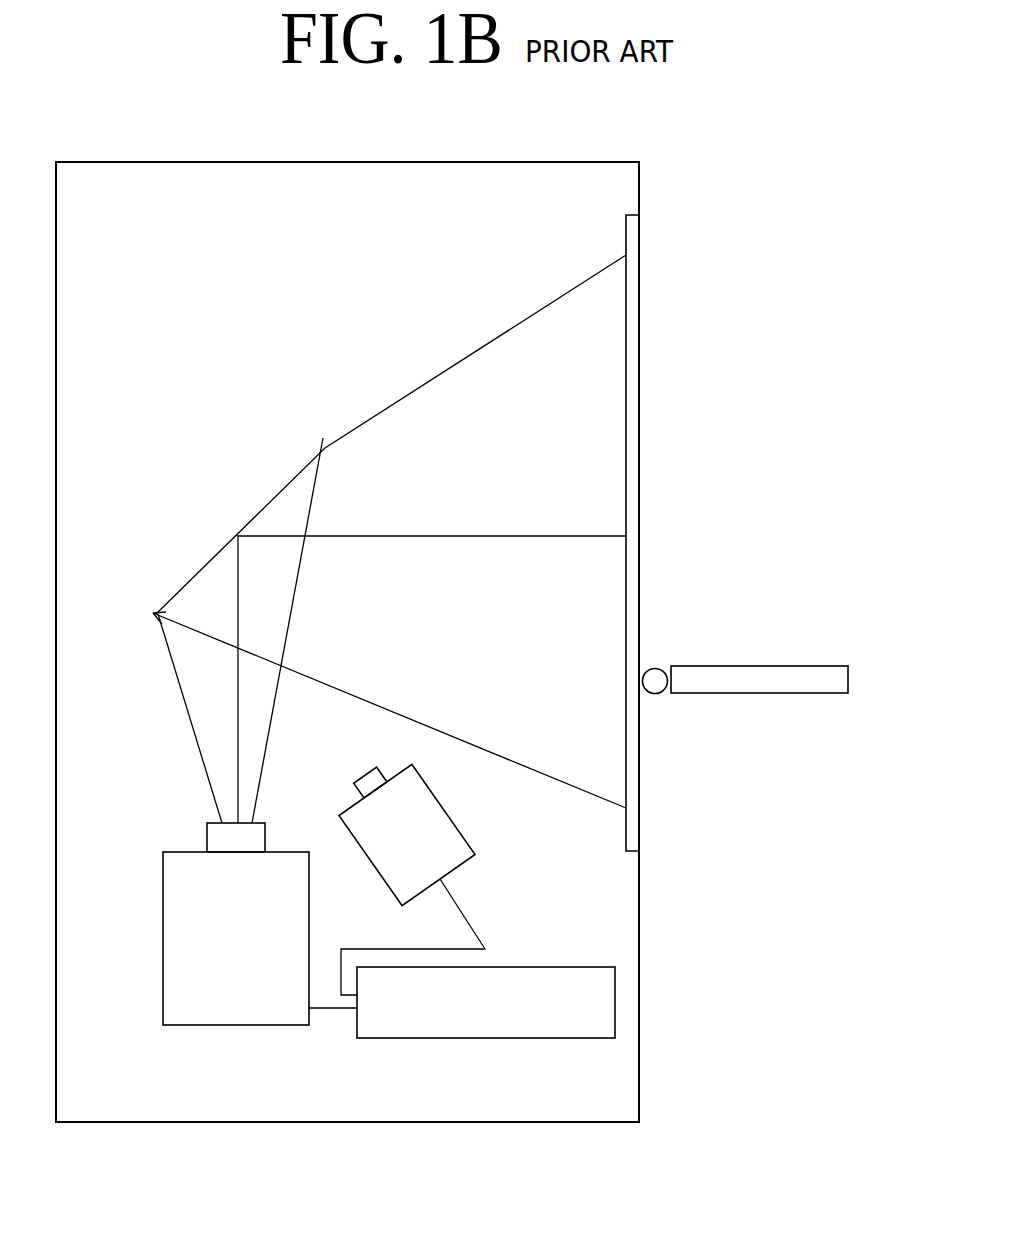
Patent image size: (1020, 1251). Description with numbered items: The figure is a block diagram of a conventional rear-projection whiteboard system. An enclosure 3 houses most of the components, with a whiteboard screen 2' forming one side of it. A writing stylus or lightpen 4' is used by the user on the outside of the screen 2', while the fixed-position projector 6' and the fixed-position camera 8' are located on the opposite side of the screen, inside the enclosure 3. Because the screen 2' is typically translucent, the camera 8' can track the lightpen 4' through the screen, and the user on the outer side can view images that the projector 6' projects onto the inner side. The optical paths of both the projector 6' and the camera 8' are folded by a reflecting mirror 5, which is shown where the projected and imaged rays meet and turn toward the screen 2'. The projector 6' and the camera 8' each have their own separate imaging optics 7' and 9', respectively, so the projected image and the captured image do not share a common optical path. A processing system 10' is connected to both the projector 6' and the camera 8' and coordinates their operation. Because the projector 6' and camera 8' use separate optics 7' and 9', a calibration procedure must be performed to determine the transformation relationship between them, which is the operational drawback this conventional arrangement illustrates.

The enclosure 3 is at (222, 1122).
The whiteboard screen 2' is at (702, 533).
The writing stylus or lightpen 4' is at (776, 699).
The reflecting mirror 5 is at (180, 600).
The fixed-position projector 6' is at (202, 938).
The imaging optics of the projector 7' is at (180, 828).
The fixed-position camera 8' is at (447, 834).
The imaging optics of the camera 9' is at (392, 764).
The processing system 10' is at (462, 995).